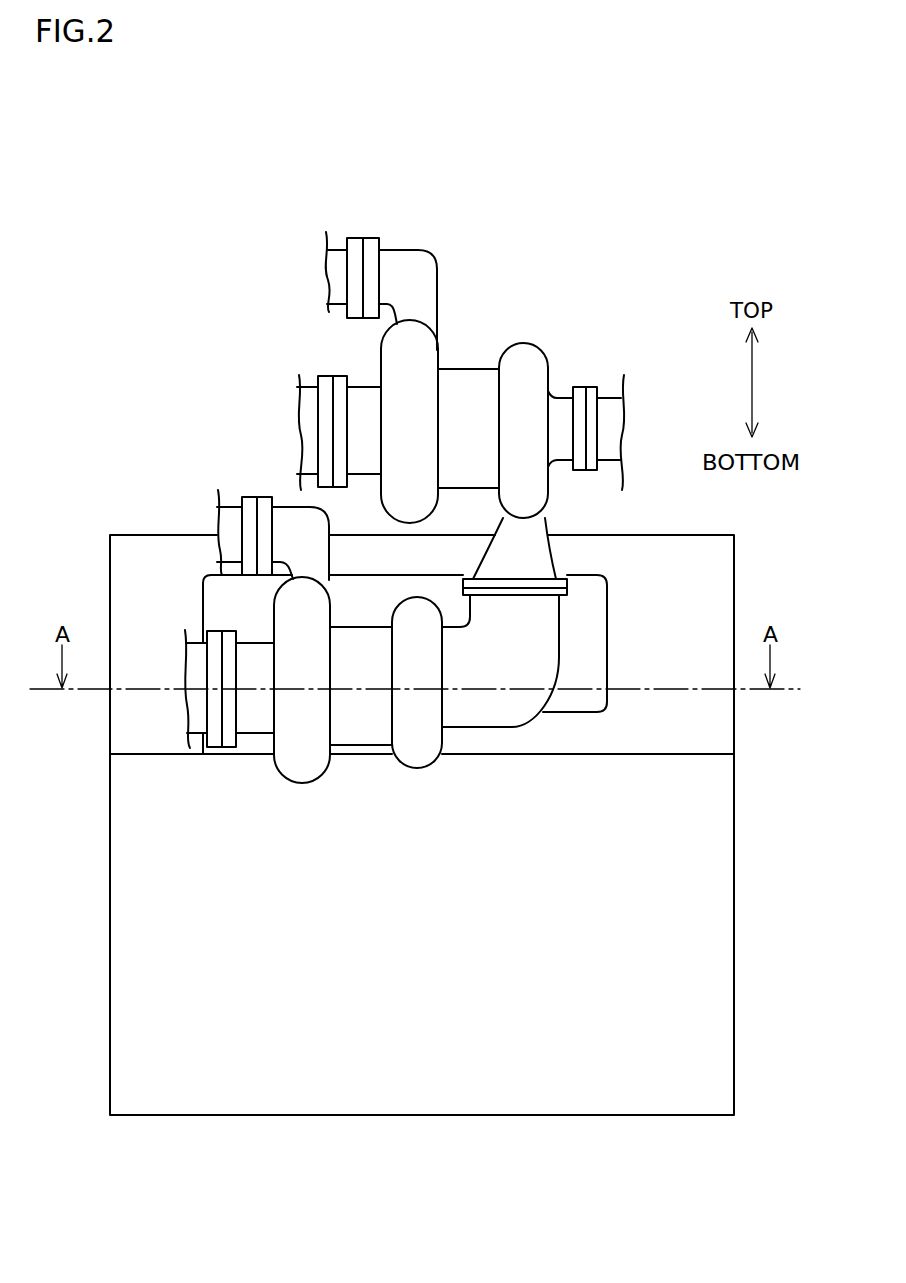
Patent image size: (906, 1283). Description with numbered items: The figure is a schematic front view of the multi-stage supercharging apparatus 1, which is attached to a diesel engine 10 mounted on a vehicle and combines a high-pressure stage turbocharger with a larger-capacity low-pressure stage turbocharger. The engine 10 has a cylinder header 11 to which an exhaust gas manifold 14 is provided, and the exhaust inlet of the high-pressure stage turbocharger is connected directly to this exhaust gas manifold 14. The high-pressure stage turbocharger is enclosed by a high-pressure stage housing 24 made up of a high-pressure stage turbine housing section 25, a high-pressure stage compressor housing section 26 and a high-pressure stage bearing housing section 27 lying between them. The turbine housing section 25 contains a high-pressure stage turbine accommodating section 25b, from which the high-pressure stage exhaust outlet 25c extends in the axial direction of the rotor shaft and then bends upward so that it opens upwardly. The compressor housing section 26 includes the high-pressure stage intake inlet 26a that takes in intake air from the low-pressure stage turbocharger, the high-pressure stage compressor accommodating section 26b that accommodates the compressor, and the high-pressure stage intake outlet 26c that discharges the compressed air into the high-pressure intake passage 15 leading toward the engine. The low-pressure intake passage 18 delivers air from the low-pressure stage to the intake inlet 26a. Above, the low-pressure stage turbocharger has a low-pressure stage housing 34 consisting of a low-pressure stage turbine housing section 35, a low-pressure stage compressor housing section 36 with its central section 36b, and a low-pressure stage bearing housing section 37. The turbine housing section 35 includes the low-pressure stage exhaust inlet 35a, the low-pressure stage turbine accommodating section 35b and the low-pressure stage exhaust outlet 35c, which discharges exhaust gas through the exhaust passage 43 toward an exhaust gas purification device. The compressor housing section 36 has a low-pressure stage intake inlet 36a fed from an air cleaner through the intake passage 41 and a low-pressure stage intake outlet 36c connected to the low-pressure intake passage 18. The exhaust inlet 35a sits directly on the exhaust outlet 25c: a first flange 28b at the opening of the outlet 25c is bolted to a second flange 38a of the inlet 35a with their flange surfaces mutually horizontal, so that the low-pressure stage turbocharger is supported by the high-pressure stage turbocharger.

The multi-stage supercharging apparatus 1 is at (293, 147).
The diesel engine 10 is at (762, 856).
The cylinder header 11 is at (733, 723).
The exhaust gas manifold 14 is at (607, 657).
The high-pressure intake passage 15 is at (232, 518).
The low-pressure intake passage 18 is at (331, 313).
The high-pressure stage housing 24 is at (492, 925).
The high-pressure stage turbine housing section 25 is at (530, 883).
The high-pressure stage turbine accommodating section 25b is at (417, 768).
The high-pressure stage exhaust outlet 25c is at (513, 713).
The high-pressure stage compressor housing section 26 is at (362, 883).
The high-pressure stage intake inlet 26a is at (252, 727).
The high-pressure stage compressor accommodating section 26b is at (307, 780).
The high-pressure stage intake outlet 26c is at (292, 568).
The high-pressure stage bearing housing section 27 is at (386, 745).
The flange (first flange) 28b is at (563, 597).
The low-pressure stage housing 34 is at (688, 157).
The low-pressure stage turbine housing section 35 is at (748, 199).
The low-pressure stage exhaust inlet 35a is at (538, 540).
The low-pressure stage turbine accommodating section 35b is at (522, 343).
The low-pressure stage exhaust outlet 35c is at (565, 397).
The low-pressure stage compressor housing section 36 is at (512, 192).
The low-pressure stage intake inlet 36a is at (357, 383).
The first rotor body (upper) 36b is at (418, 331).
The low-pressure stage intake outlet 36c is at (418, 250).
The low-pressure stage bearing housing section 37 is at (457, 367).
The flange (second flange) 38a is at (557, 575).
The intake passage 41 is at (300, 378).
The exhaust passage 43 is at (603, 397).